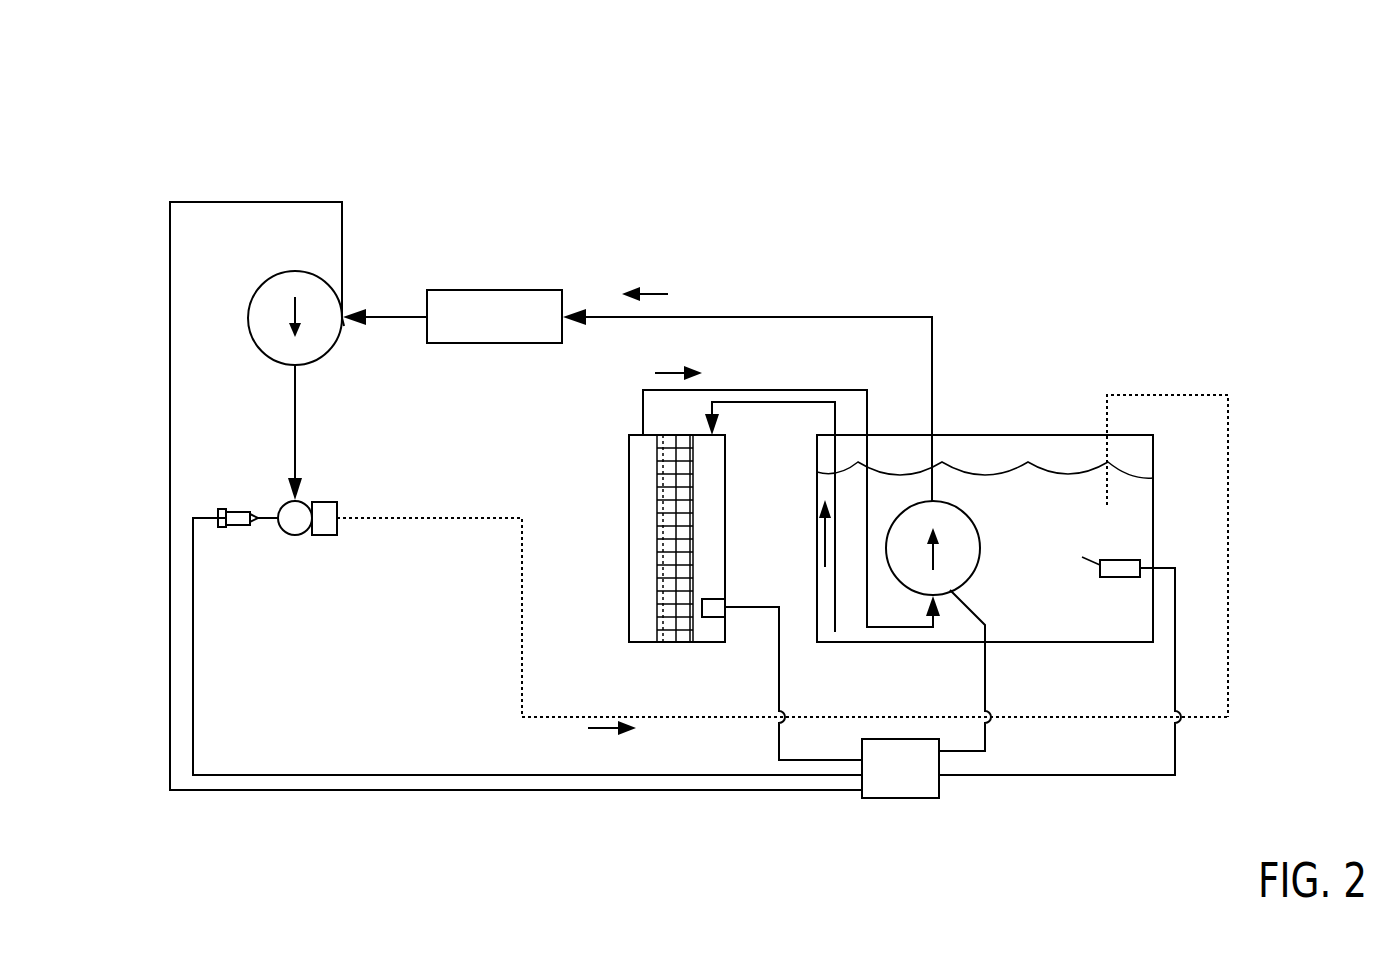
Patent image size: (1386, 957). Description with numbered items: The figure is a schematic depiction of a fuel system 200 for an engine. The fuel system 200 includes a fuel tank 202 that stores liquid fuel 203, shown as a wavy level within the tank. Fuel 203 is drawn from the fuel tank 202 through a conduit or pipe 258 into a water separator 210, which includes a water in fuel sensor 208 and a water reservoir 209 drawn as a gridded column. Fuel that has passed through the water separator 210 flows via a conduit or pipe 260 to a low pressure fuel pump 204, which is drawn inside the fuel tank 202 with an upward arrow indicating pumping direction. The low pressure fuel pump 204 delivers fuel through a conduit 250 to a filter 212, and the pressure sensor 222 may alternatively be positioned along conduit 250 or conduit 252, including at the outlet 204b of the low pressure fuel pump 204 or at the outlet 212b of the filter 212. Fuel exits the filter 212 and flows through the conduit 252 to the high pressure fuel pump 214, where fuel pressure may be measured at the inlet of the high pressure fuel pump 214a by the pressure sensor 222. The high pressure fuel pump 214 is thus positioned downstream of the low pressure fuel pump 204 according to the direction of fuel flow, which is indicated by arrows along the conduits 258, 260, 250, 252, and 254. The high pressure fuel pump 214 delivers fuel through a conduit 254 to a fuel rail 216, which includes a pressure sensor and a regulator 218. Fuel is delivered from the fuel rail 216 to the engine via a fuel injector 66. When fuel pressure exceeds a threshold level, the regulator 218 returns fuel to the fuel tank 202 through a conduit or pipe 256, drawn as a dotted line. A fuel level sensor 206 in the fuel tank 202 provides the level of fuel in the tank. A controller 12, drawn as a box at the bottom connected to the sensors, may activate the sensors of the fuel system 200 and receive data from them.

The fuel system 200 is at (140, 88).
The high pressure fuel pump 214 is at (268, 278).
The pressure sensor 222 is at (345, 305).
The conduit 252 is at (356, 312).
The outlet of fuel filter 212b is at (425, 312).
The filter 212 is at (474, 290).
The conduit 250 is at (733, 317).
The inlet of high pressure fuel pump 214a is at (344, 322).
The conduit 254 is at (297, 392).
The fuel rail 216 is at (305, 502).
The regulator 218 is at (330, 502).
The conduit 256 is at (443, 518).
The fuel injector 66 is at (240, 528).
The water separator 210 is at (629, 437).
The water reservoir 209 is at (675, 643).
The conduit 260 is at (730, 390).
The conduit 258 is at (733, 404).
The water in fuel sensor 208 is at (715, 600).
The fuel tank 202 is at (955, 435).
The liquid fuel 203 is at (1130, 473).
The outlet of low pressure fuel pump 204b is at (928, 500).
The low pressure fuel pump 204 is at (955, 512).
The fuel level sensor 206 is at (1120, 578).
The controller 12 is at (900, 768).